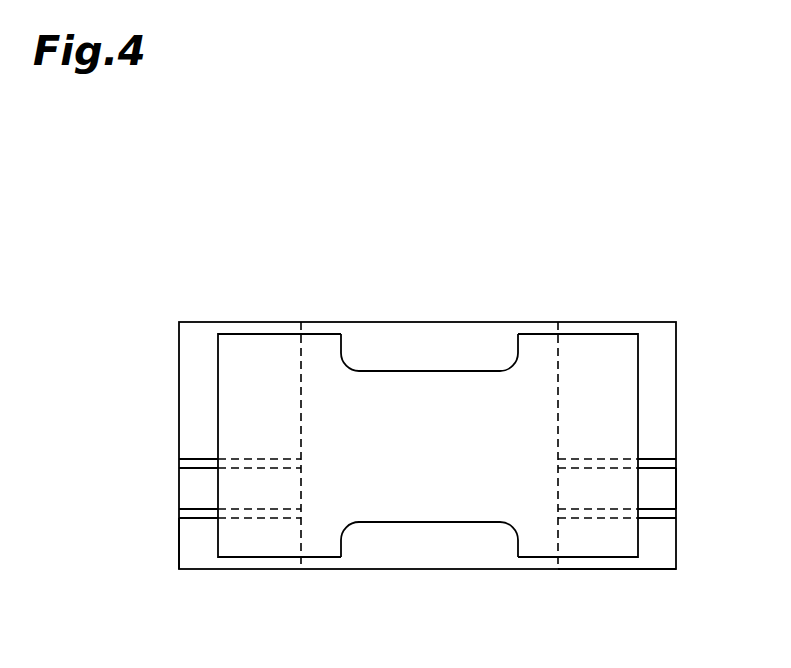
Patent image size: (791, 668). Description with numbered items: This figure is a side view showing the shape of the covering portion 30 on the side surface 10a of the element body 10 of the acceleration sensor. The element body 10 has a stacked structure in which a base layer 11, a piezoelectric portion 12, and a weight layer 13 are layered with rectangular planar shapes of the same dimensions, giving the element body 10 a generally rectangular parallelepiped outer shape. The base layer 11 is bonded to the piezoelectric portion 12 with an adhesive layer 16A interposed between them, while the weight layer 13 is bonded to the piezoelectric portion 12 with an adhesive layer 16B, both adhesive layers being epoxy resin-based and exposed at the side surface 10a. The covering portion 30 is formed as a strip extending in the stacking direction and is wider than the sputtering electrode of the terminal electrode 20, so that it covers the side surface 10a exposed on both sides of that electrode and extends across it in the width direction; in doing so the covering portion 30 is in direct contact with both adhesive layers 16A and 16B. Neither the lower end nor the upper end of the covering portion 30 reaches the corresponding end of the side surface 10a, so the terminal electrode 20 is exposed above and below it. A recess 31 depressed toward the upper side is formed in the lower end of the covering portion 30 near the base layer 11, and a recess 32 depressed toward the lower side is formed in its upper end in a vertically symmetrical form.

The element body 10 is at (244, 321).
The side surface 10a is at (190, 544).
The base layer 11 is at (668, 553).
The piezoelectric portion 12 is at (668, 490).
The weight layer 13 is at (668, 372).
The adhesive layer 16A is at (668, 513).
The adhesive layer 16B is at (668, 463).
The terminal electrode 20 is at (380, 328).
The covering portion 30 is at (218, 355).
The recess 31 is at (443, 522).
The recess 32 is at (440, 371).